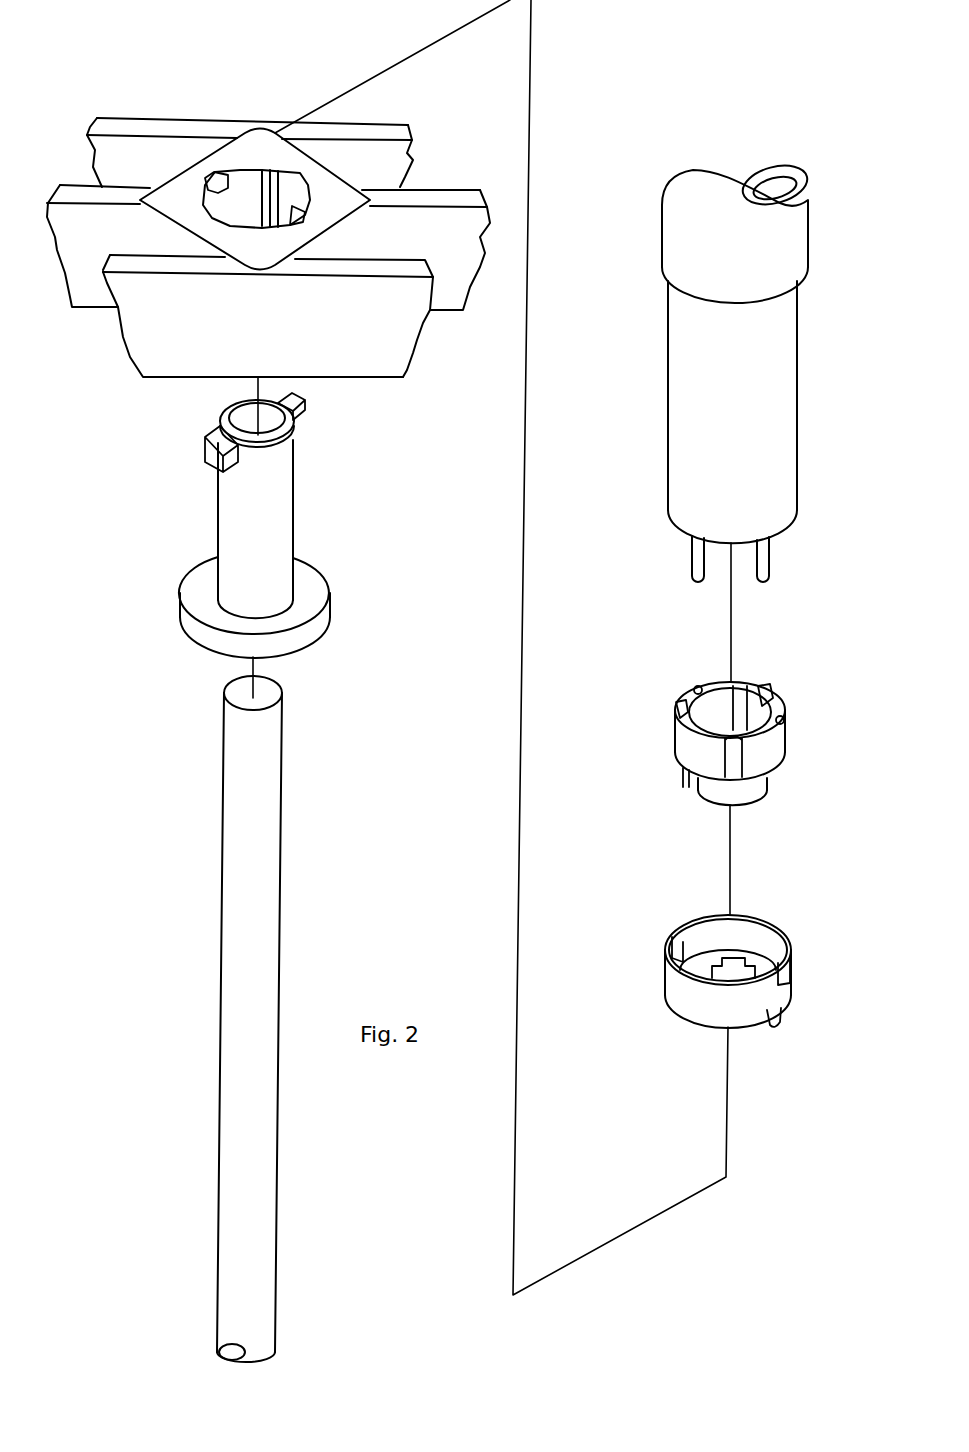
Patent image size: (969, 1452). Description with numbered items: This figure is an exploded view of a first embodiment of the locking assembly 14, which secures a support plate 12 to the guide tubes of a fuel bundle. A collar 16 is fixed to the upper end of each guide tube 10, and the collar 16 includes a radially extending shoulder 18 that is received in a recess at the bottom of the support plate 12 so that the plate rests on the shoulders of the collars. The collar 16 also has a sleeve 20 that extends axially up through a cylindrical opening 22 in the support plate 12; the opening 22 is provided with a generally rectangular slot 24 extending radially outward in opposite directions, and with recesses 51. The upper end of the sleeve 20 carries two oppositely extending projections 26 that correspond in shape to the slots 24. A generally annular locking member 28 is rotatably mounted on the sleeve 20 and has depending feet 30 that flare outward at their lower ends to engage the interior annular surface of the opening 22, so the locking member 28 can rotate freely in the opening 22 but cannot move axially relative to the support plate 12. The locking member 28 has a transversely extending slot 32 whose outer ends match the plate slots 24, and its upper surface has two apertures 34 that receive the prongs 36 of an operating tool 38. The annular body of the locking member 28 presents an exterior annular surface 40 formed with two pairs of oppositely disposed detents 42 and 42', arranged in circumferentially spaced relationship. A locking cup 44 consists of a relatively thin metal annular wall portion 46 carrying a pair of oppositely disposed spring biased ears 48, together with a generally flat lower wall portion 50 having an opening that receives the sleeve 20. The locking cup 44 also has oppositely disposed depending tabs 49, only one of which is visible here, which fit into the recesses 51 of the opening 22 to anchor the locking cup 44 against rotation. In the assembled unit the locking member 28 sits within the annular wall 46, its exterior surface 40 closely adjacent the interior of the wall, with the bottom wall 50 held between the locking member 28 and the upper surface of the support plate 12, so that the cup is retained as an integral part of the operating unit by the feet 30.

The guide tube 10 is at (256, 888).
The support plate 12 is at (378, 358).
The locking assembly 14 is at (217, 531).
The collar 16 is at (313, 502).
The shoulder 18 is at (320, 627).
The sleeve 20 is at (300, 428).
The opening 22 is at (248, 195).
The slot 24 is at (268, 140).
The projections 26 is at (288, 397).
The locking member 28 is at (793, 738).
The feet 30 is at (750, 793).
The slot 32 is at (755, 684).
The apertures 34 is at (696, 688).
The prongs 36 is at (764, 563).
The operating tool 38 is at (775, 460).
The exterior annular surface 40 is at (710, 763).
The detents 42 is at (711, 691).
The detents 42' is at (762, 707).
The locking cup 44 is at (800, 960).
The annular wall portion 46 is at (777, 947).
The spring biased ears 48 is at (680, 940).
The tabs 49 is at (773, 1020).
The lower wall portion 50 is at (731, 950).
The recesses 51 is at (222, 177).